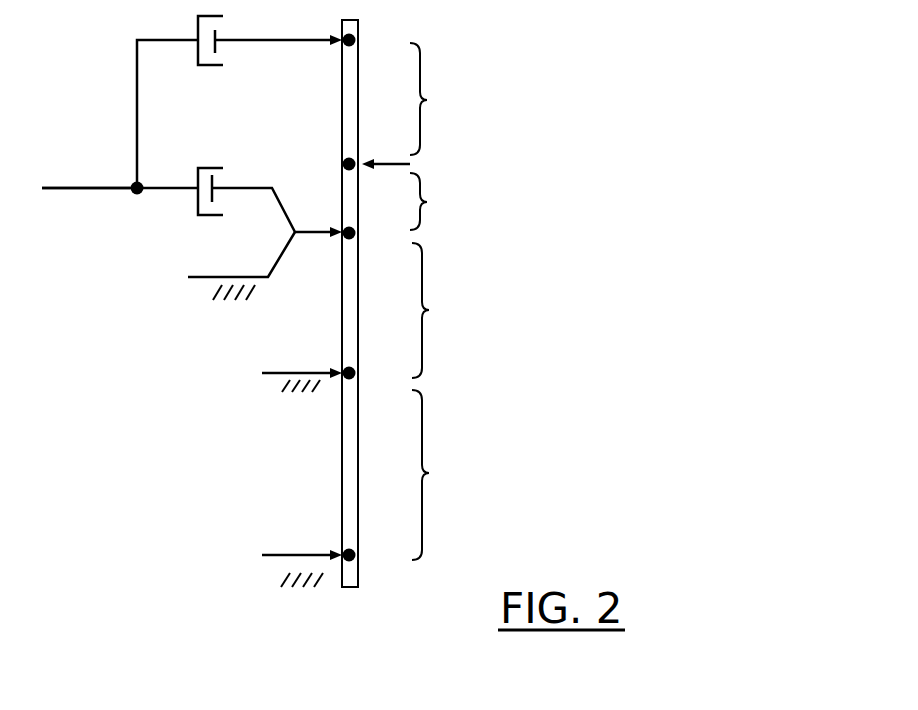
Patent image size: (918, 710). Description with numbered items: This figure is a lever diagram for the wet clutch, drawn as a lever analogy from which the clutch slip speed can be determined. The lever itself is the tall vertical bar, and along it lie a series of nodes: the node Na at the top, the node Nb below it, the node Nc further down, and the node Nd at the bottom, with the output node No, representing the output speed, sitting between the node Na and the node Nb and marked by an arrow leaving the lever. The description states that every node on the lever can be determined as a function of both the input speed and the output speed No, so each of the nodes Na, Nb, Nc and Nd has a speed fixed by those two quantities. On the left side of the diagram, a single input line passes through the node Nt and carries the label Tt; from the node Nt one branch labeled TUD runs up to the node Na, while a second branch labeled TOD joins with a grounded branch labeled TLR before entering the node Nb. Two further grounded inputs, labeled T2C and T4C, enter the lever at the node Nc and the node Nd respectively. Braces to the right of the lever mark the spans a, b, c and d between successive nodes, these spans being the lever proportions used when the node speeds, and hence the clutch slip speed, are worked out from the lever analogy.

The input terminal (total torque) Tt is at (86, 170).
The input node Nt is at (125, 209).
The up-down damper torque path TUD is at (239, 102).
The overdrive damper torque path TOD is at (270, 187).
The left-right grounded torque input TLR is at (214, 266).
The second clutch torque input T2C is at (276, 374).
The fourth clutch torque input T4C is at (276, 565).
The node a on lever Na is at (369, 42).
The output speed No is at (395, 162).
The node b on lever Nb is at (369, 234).
The node c on lever Nc is at (368, 374).
The node d on lever Nd is at (370, 555).
The lever arm length a is at (442, 99).
The lever arm length b is at (442, 201).
The lever arm length c is at (443, 310).
The lever arm length d is at (445, 475).